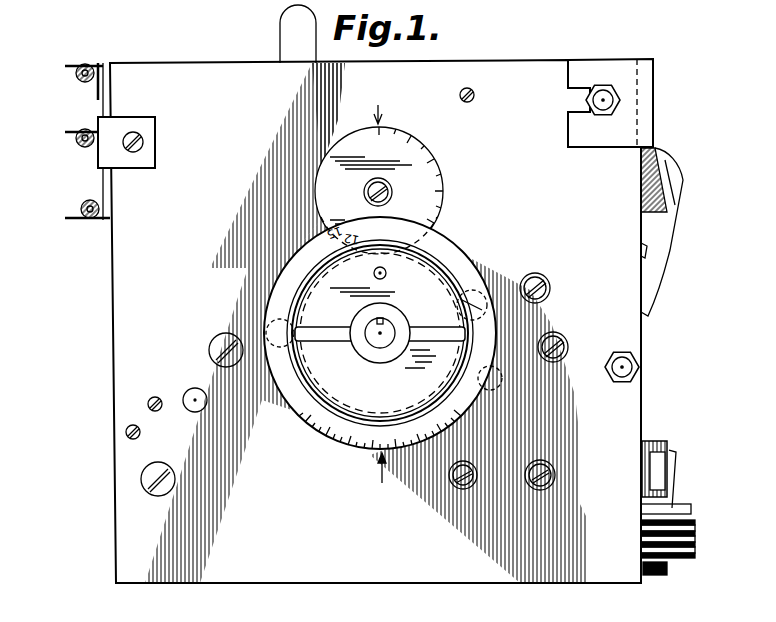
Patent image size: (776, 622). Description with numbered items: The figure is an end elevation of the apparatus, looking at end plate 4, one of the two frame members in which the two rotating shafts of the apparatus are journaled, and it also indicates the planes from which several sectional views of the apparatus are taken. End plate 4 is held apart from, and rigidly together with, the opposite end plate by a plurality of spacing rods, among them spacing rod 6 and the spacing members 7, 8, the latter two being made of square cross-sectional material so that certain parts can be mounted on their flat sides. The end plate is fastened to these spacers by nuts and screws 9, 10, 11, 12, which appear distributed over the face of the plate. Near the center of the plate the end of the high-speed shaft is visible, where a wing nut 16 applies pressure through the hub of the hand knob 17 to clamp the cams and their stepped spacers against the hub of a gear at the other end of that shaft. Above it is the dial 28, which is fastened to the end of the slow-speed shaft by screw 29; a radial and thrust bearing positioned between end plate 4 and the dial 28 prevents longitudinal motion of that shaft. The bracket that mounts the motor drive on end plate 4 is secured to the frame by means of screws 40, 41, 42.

The end plate 4 is at (122, 298).
The spacing rod 6 is at (22, 28).
The spacing member 7 is at (340, 50).
The spacing member 8 is at (672, 19).
The nut 9 is at (605, 92).
The nut 10 is at (620, 385).
The screw 11 is at (210, 349).
The screw 12 is at (156, 494).
The wing nut 16 is at (452, 345).
The hand knob 17 is at (325, 405).
The dial 28 is at (419, 147).
The screw 29 is at (364, 191).
The screw 40 is at (565, 338).
The screw 41 is at (541, 278).
The screw 42 is at (470, 305).